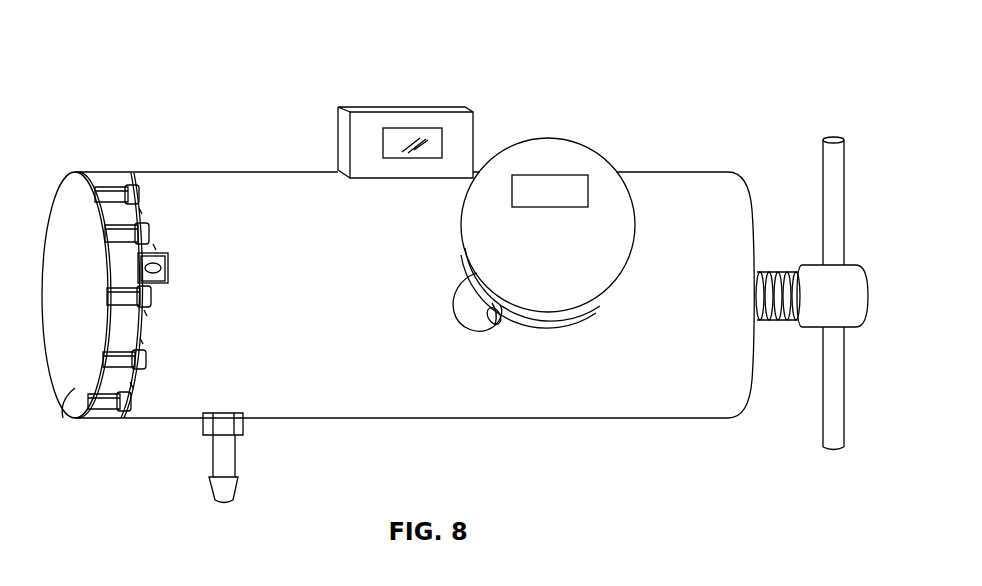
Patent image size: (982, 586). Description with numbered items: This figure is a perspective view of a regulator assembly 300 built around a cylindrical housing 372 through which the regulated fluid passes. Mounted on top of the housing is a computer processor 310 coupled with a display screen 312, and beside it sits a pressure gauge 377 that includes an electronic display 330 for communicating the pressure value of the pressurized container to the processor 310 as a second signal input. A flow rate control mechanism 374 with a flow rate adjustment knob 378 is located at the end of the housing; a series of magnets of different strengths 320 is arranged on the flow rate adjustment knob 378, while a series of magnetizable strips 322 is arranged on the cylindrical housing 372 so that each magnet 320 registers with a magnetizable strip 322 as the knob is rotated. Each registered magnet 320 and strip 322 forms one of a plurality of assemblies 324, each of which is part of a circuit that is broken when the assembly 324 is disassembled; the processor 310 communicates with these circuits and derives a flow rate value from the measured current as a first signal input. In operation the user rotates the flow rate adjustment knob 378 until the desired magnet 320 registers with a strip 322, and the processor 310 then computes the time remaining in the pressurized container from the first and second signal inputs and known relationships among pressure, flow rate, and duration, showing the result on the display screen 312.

The regulator assembly 300 is at (134, 86).
The computer processor 310 is at (444, 107).
The display screen 312 is at (403, 130).
The magnets of different strengths 320 is at (107, 180).
The magnetizable strips 322 is at (130, 186).
The assemblies 324 is at (137, 213).
The electronic display 330 is at (561, 175).
The cylindrical housing 372 is at (367, 419).
The flow rate control mechanism 374 is at (90, 172).
The pressure gauge 377 is at (567, 312).
The flow rate adjustment knob 378 is at (63, 418).